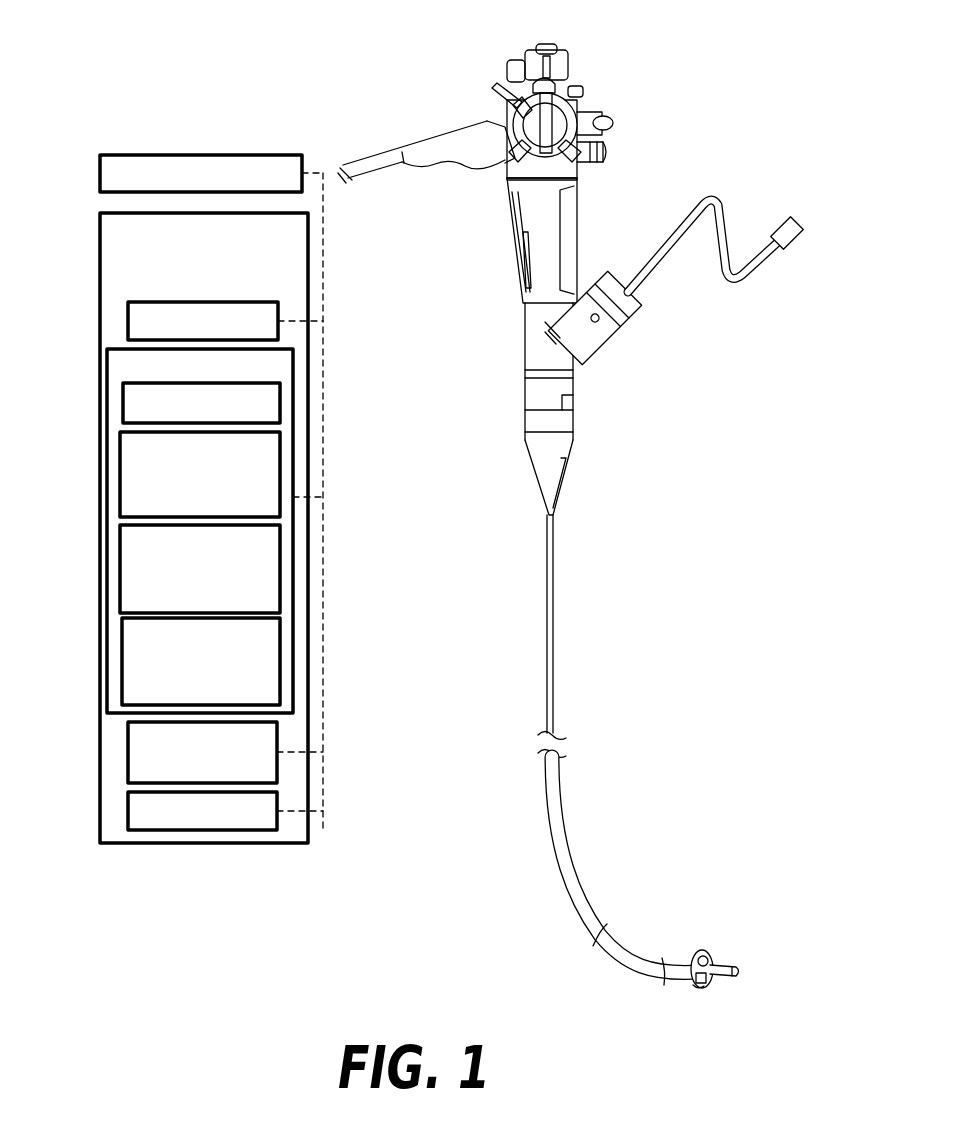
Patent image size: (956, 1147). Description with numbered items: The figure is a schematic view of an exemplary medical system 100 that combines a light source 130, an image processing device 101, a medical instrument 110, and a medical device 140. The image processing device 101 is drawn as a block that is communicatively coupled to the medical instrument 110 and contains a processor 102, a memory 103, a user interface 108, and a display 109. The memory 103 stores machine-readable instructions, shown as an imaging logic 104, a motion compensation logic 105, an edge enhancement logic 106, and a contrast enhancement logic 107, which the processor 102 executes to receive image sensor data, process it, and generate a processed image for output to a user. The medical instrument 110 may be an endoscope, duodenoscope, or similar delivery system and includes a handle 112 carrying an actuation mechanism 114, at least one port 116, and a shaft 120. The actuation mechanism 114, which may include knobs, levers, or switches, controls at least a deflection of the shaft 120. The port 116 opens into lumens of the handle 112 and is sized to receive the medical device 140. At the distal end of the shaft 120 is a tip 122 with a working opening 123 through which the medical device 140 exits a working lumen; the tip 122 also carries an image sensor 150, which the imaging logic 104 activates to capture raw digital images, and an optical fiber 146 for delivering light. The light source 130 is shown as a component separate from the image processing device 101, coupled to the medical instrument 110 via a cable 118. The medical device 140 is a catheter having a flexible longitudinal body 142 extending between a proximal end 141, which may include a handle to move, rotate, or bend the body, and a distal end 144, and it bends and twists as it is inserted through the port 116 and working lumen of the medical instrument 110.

The medical system 100 is at (119, 85).
The image processing device 101 is at (100, 257).
The processor 102 is at (128, 322).
The memory 103 is at (107, 522).
The imaging logic 104 is at (123, 405).
The motion compensation logic 105 is at (120, 477).
The edge enhancement logic 106 is at (120, 570).
The contrast enhancement logic 107 is at (122, 658).
The user interface 108 is at (128, 750).
The display 109 is at (128, 812).
The medical instrument 110 is at (531, 544).
The handle 112 is at (587, 233).
The actuation mechanism 114 is at (606, 103).
The port 116 is at (618, 320).
The cable 118 is at (388, 158).
The shaft 120 is at (563, 848).
The tip 122 is at (722, 952).
The working opening 123 is at (712, 988).
The light source 130 is at (100, 176).
The medical device 140 is at (766, 292).
The proximal end 141 is at (793, 224).
The longitudinal body 142 is at (764, 249).
The distal end 144 is at (752, 983).
The optical fiber 146 is at (700, 953).
The image sensor 150 is at (695, 985).